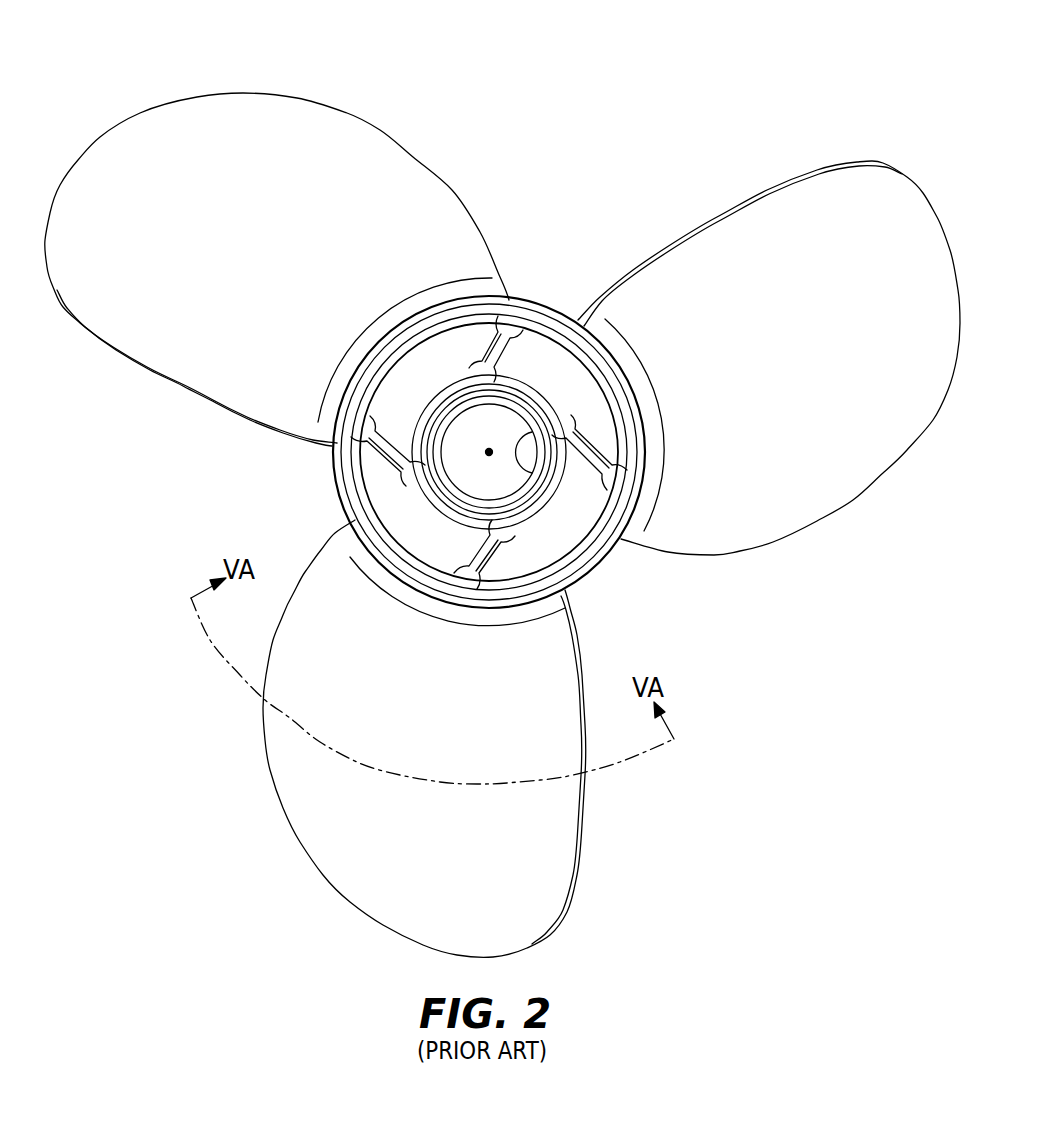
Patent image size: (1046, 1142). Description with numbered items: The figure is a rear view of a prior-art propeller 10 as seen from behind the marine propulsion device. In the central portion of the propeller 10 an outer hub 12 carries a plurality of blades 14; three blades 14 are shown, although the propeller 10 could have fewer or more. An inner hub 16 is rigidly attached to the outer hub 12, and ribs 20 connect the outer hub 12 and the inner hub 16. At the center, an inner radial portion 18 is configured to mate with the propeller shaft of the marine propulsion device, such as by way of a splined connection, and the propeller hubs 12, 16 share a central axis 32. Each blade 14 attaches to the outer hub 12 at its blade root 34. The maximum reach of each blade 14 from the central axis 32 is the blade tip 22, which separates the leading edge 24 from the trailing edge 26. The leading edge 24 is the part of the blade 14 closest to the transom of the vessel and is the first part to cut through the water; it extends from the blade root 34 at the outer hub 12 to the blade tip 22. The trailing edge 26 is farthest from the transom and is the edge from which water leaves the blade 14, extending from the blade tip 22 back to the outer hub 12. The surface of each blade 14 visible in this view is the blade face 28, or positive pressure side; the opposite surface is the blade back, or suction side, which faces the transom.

The propeller 10 is at (548, 101).
The outer hub 12 is at (493, 497).
The blades 14 is at (267, 110).
The inner hub 16 is at (550, 383).
The inner radial portion 18 is at (522, 468).
The ribs 20 is at (598, 448).
The blade tips 22 is at (103, 137).
The leading edges 24 is at (362, 115).
The trailing edges 26 is at (112, 347).
The blade face 28 is at (215, 242).
The central axis 32 is at (489, 452).
The blade root 34 is at (572, 312).